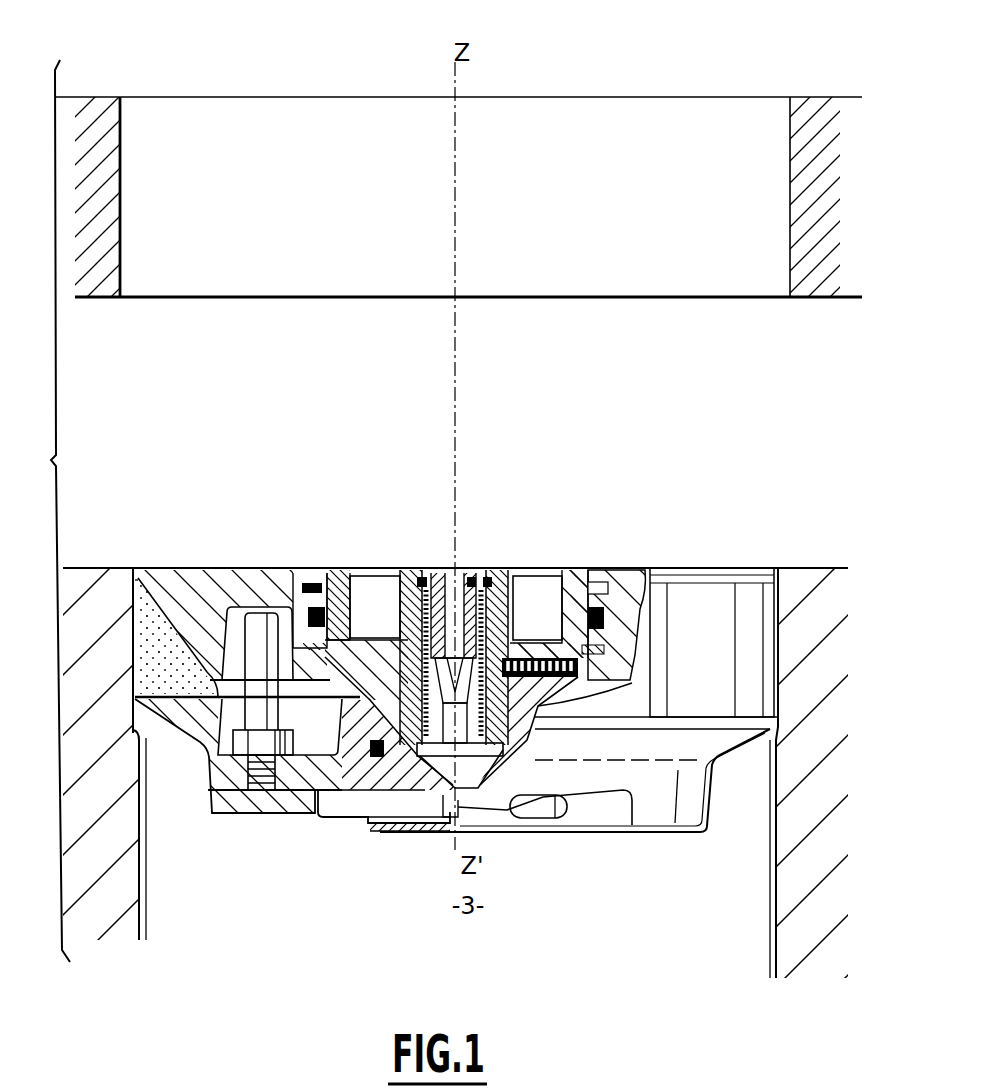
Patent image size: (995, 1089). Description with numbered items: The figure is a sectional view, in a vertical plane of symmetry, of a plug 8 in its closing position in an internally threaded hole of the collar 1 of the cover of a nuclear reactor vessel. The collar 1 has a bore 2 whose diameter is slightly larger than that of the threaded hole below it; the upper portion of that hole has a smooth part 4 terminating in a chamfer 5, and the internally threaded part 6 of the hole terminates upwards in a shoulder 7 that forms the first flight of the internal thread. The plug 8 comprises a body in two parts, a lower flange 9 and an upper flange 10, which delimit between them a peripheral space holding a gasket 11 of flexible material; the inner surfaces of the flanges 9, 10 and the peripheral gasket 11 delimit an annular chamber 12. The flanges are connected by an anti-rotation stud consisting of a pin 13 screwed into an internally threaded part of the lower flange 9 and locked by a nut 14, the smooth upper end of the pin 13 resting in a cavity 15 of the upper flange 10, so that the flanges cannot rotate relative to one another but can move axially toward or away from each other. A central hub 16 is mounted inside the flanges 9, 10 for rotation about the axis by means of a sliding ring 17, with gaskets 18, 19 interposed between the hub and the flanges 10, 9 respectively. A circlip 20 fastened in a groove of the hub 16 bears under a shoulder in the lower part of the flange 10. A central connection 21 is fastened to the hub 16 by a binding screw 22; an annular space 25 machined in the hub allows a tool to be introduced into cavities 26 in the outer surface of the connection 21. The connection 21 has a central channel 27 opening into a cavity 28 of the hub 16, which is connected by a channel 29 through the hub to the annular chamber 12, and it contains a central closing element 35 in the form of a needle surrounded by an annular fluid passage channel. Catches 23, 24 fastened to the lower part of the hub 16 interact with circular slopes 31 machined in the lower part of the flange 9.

The collar 1 is at (120, 117).
The bore 2 is at (122, 190).
The smooth part 4 is at (137, 663).
The chamfer 5 is at (128, 567).
The internally threaded part 6 is at (140, 893).
The shoulder 7 is at (138, 737).
The plug 8 is at (676, 845).
The lower flange 9 is at (213, 773).
The upper flange 10 is at (192, 583).
The gasket 11 is at (147, 633).
The annular chamber 12 is at (305, 750).
The pin 13 is at (272, 713).
The nut 14 is at (258, 747).
The cavity 15 is at (267, 567).
The central hub 16 is at (607, 582).
The sliding ring 17 is at (311, 580).
The gasket 18 is at (316, 588).
The gasket 19 is at (372, 733).
The circlip 20 is at (640, 653).
The central connection 21 is at (527, 592).
The binding screw 22 is at (623, 693).
The catch 23 is at (368, 818).
The catch 24 is at (540, 813).
The annular space 25 is at (545, 595).
The cavities 26 is at (388, 592).
The central channel 27 is at (458, 766).
The cavity 28 is at (440, 770).
The channel 29 is at (375, 607).
The circular slopes 31 is at (597, 795).
The central closing element 35 is at (457, 572).